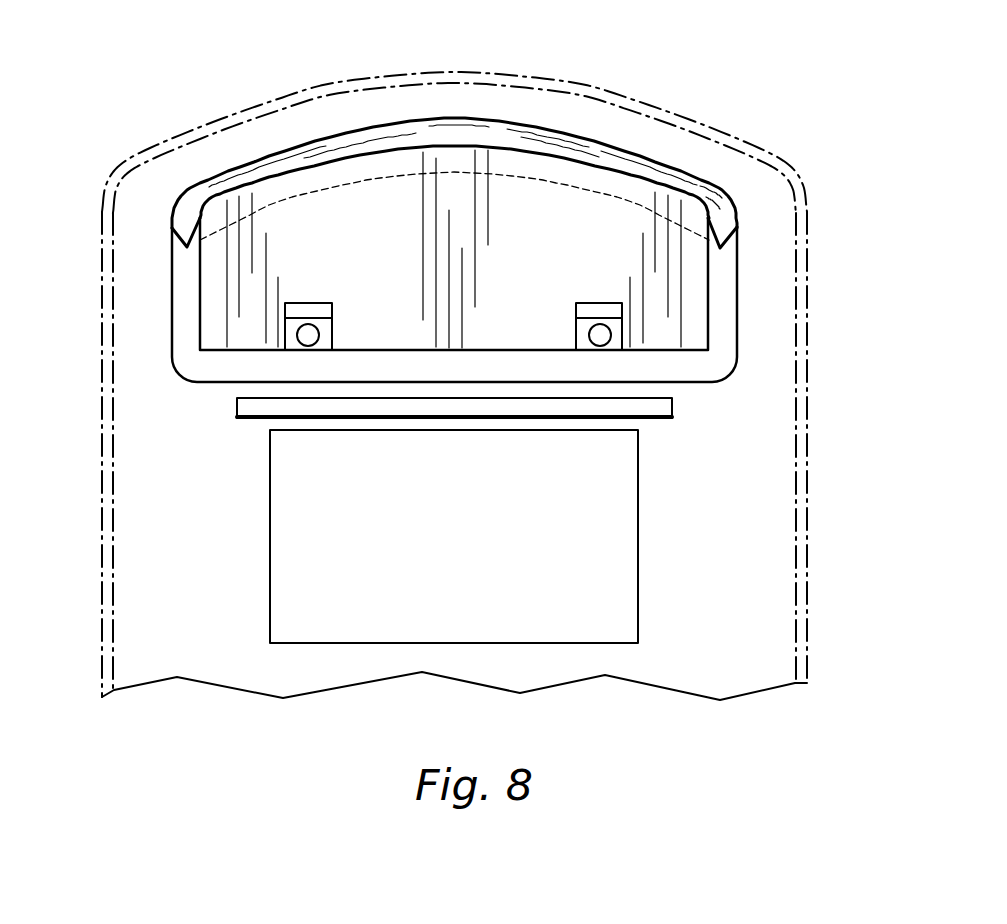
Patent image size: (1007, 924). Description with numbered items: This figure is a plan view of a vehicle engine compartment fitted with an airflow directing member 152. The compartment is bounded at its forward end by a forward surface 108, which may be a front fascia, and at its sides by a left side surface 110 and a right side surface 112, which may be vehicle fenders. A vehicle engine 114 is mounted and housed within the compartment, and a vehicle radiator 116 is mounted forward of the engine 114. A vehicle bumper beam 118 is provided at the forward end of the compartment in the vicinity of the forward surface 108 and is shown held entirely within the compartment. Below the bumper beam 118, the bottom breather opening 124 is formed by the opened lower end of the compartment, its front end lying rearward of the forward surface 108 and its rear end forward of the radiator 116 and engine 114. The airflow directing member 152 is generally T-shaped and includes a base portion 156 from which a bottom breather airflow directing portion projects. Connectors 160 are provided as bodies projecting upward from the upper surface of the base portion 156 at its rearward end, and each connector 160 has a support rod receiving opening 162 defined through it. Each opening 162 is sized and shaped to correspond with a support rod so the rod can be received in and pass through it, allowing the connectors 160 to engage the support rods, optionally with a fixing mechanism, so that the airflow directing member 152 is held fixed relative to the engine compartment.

The vehicle engine compartment forward surface 108 is at (603, 88).
The left side surface 110 is at (103, 342).
The right side surface 112 is at (805, 368).
The vehicle engine 114 is at (608, 590).
The vehicle radiator 116 is at (447, 410).
The vehicle bumper beam 118 is at (284, 161).
The bottom breather opening 124 is at (172, 303).
The airflow directing member 152 is at (208, 270).
The base portion 156 is at (392, 273).
The connectors 160 is at (304, 309).
The support rod receiving opening 162 is at (313, 335).